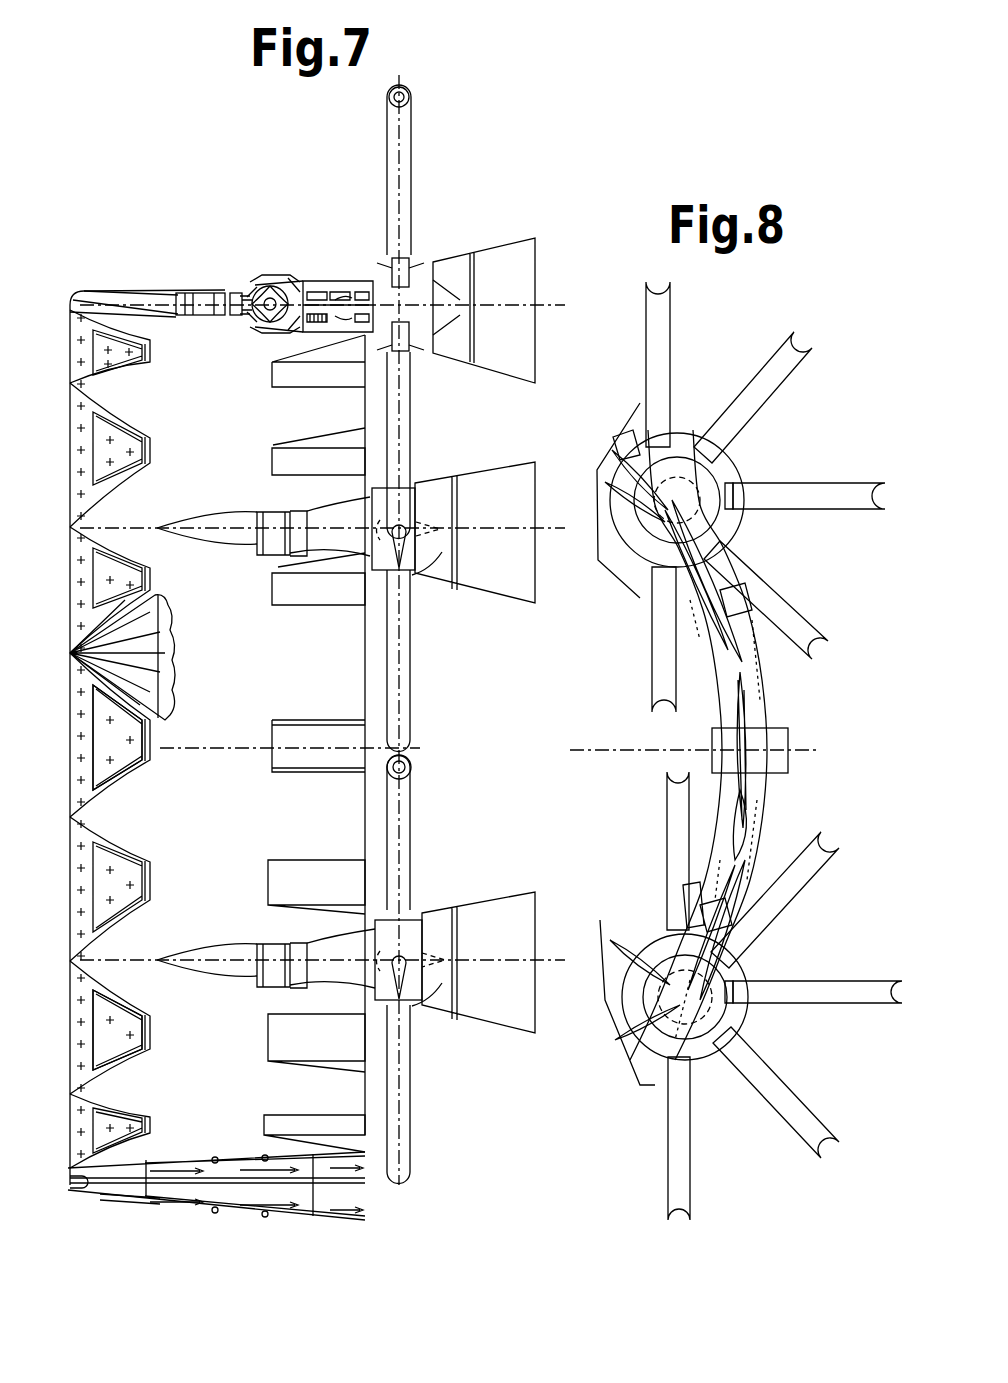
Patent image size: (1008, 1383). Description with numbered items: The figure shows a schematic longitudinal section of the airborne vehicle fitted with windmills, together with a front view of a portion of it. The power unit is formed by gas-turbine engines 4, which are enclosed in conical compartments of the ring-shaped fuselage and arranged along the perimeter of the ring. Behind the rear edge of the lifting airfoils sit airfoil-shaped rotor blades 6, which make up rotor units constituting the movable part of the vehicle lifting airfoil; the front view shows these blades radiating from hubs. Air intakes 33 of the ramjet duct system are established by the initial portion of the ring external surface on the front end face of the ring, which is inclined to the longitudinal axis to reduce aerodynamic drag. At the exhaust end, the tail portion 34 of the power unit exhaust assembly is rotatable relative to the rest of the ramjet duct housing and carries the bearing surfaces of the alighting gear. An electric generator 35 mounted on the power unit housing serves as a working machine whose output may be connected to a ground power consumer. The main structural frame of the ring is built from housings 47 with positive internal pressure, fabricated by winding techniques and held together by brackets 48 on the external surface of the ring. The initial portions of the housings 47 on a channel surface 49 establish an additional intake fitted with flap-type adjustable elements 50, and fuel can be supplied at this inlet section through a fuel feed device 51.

In FIG. 7, the gas-turbine engine 4 is at (320, 290).
In FIG. 7, the rotor blade 6 is at (387, 205).
In FIG. 8, the rotor blade 6 is at (790, 350).
In FIG. 7, the air intake 33 is at (138, 1192).
In FIG. 8, the air intake 33 is at (745, 855).
In FIG. 7, the tail portion 34 is at (525, 297).
In FIG. 7, the electric generator 35 is at (208, 292).
In FIG. 8, the housing 47 is at (720, 698).
In FIG. 8, the bracket 48 is at (715, 770).
In FIG. 7, the channel surface 49 is at (128, 660).
In FIG. 7, the adjustable element 50 is at (130, 1175).
In FIG. 7, the fuel feed device 51 is at (110, 742).